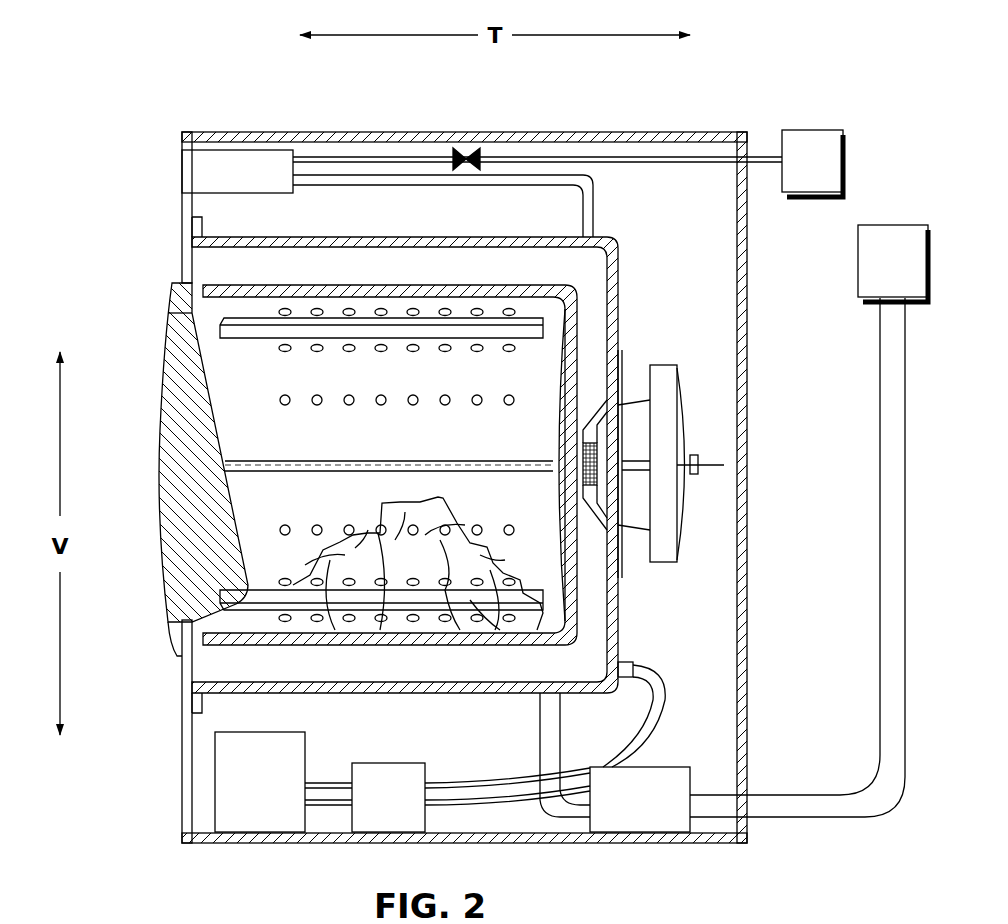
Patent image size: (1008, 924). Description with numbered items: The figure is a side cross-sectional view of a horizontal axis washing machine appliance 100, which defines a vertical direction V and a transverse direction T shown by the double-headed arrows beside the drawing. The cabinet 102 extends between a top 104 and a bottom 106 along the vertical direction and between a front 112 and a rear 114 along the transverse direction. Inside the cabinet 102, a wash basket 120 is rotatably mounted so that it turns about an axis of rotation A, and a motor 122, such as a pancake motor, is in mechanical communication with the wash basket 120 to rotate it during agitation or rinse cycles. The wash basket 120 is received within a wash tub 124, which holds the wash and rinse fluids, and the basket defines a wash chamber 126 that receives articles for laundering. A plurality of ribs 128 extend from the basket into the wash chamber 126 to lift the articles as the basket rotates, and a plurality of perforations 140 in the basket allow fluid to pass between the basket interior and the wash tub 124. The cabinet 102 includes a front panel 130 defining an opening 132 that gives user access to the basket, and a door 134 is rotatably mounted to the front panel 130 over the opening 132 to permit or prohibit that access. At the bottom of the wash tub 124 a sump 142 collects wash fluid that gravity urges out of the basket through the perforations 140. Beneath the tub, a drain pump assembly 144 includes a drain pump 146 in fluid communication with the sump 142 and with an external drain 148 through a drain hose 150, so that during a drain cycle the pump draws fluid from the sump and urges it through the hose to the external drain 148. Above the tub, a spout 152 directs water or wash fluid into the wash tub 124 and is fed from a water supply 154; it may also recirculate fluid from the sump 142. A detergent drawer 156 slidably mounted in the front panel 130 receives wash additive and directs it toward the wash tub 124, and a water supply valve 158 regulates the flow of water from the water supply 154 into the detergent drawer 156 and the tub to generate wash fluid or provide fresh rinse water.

The washing machine appliance 100 is at (207, 62).
The cabinet 102 is at (748, 473).
The top 104 is at (763, 128).
The bottom 106 is at (770, 833).
The front 112 is at (173, 128).
The rear 114 is at (752, 290).
The wash basket 120 is at (385, 292).
The motor 122 is at (665, 400).
The wash tub 124 is at (621, 310).
The wash chamber 126 is at (245, 418).
The ribs 128 is at (322, 462).
The front panel 130 is at (186, 668).
The opening 132 is at (210, 322).
The door 134 is at (180, 523).
The perforations 140 is at (448, 400).
The sump 142 is at (580, 650).
The drain pump assembly 144 is at (714, 720).
The drain pump 146 is at (640, 799).
The external drain 148 is at (893, 263).
The drain hose 150 is at (878, 597).
The spout 152 is at (597, 208).
The water supply 154 is at (812, 163).
The detergent drawer 156 is at (252, 170).
The water supply valve 158 is at (482, 147).
The axis of rotation A is at (717, 465).